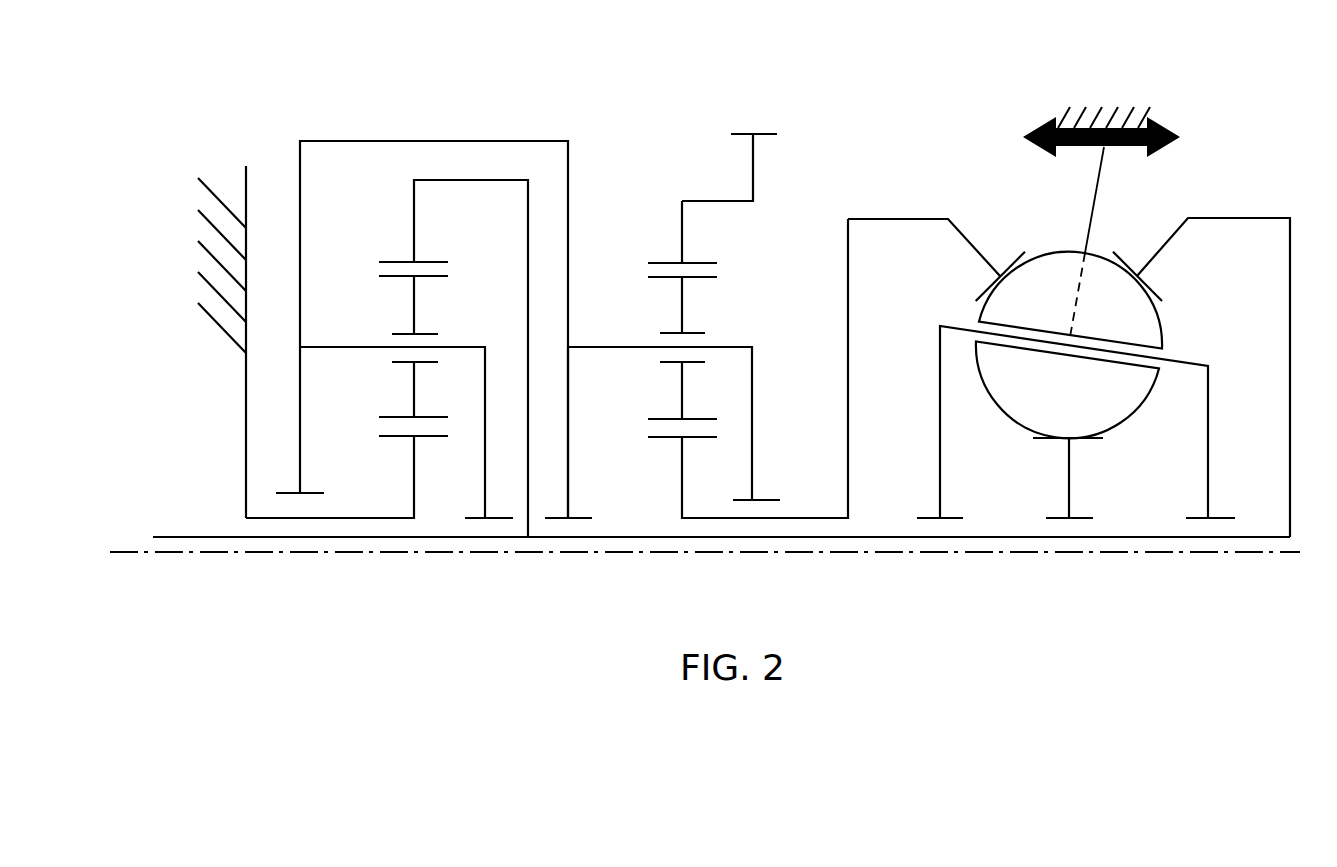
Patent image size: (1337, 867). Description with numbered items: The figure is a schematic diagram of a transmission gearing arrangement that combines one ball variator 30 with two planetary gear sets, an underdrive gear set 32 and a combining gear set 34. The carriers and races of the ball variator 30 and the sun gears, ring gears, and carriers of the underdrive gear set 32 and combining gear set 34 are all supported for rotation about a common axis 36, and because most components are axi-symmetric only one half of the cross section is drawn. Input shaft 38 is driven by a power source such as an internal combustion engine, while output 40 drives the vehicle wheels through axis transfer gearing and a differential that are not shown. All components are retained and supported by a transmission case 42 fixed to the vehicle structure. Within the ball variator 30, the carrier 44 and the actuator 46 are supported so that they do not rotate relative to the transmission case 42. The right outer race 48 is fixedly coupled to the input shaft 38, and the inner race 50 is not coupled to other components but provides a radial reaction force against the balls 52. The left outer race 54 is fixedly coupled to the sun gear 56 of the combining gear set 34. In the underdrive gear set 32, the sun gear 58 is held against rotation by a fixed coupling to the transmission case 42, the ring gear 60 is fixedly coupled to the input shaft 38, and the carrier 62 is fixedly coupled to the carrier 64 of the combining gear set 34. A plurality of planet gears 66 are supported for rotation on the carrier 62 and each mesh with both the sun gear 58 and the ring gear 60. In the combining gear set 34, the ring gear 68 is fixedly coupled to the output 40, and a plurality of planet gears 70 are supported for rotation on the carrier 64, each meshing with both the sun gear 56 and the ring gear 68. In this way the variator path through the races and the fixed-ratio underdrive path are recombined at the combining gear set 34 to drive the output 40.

The ball variator 30 is at (980, 129).
The underdrive gear set 32 is at (385, 98).
The combining gear set 34 is at (685, 98).
The common axis 36 is at (473, 553).
The input shaft 38 is at (205, 535).
The output 40 is at (753, 160).
The transmission case 42 is at (228, 340).
The carrier 44 is at (940, 440).
The actuator 46 is at (1118, 150).
The right outer race 48 is at (1165, 250).
The inner race 50 is at (1069, 495).
The balls 52 is at (1053, 408).
The left outer race 54 is at (965, 232).
The sun gear 56 is at (682, 462).
The sun gear 58 is at (414, 483).
The ring gear 60 is at (414, 240).
The carrier 62 is at (458, 347).
The carrier 64 is at (730, 347).
The planet gears 66 is at (414, 293).
The ring gear 68 is at (682, 240).
The planet gears 70 is at (682, 293).